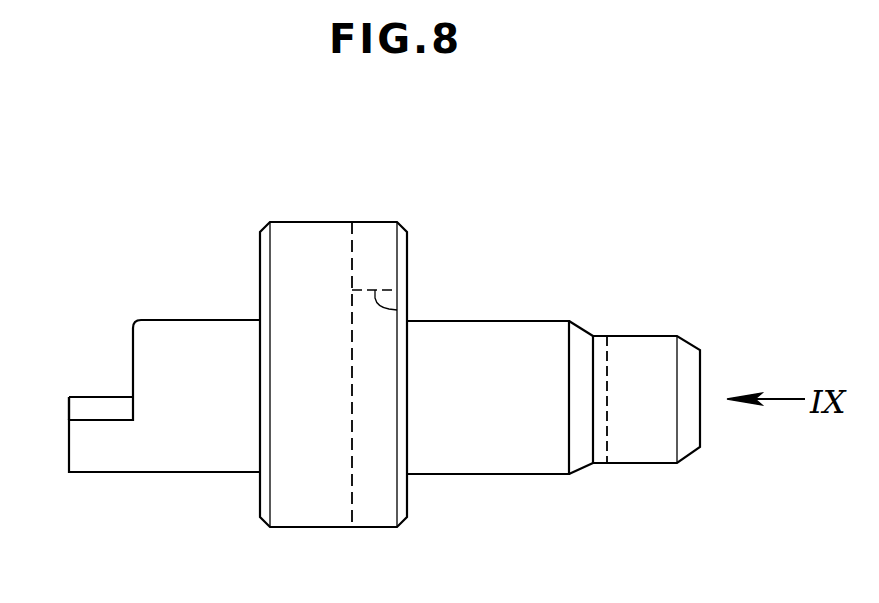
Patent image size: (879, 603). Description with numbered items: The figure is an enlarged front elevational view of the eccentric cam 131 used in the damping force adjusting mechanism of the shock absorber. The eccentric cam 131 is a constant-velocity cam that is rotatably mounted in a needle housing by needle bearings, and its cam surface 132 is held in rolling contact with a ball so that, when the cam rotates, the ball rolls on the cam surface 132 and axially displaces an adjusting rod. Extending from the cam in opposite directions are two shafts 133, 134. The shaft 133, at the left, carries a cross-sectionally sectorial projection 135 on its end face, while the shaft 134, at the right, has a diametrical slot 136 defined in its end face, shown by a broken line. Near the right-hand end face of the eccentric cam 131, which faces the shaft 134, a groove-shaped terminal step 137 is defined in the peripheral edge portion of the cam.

The eccentric cam 131 is at (411, 212).
The cam surface 132 is at (317, 232).
The shaft 133 is at (191, 458).
The shaft 134 is at (542, 332).
The cross-sectionally sectorial projection 135 is at (88, 405).
The diametrical slot 136 is at (654, 445).
The groove-shaped terminal step 137 is at (408, 302).